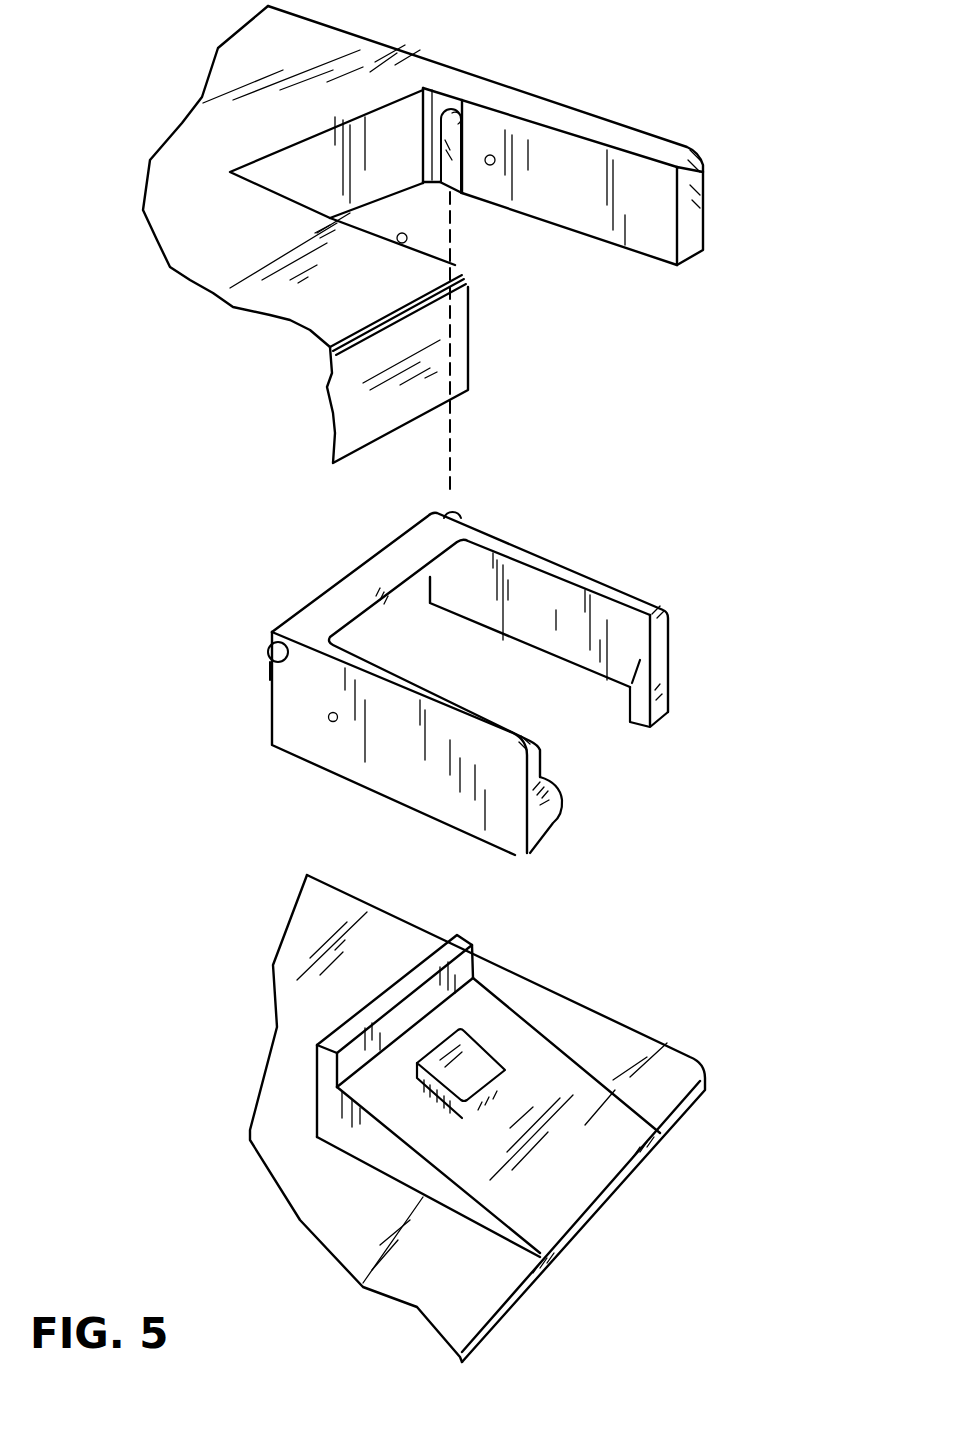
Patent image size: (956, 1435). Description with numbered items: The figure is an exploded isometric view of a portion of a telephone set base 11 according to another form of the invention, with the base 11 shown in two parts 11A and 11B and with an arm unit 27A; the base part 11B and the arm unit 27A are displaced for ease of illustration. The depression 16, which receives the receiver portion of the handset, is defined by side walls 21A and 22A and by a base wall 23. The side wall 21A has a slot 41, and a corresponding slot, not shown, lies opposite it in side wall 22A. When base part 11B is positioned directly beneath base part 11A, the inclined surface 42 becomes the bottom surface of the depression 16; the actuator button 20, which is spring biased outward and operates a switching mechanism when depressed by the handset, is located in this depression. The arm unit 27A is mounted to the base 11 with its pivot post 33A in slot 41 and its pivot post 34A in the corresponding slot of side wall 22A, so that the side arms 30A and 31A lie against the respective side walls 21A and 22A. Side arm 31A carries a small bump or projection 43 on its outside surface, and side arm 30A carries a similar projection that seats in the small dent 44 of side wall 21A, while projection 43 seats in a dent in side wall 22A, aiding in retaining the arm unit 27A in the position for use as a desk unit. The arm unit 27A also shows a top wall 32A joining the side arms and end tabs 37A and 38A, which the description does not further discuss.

The base 11 is at (385, 28).
The base part 11A is at (327, 320).
The base part 11B is at (487, 1285).
The depression 16 is at (532, 285).
The actuator button 20 is at (483, 1057).
The side wall 21A is at (593, 170).
The side wall 22A is at (400, 244).
The base wall 23 is at (293, 157).
The arm unit 27A is at (600, 756).
The side arm 30A is at (553, 597).
The side arm 31A is at (423, 780).
The top wall of clip 32A is at (360, 577).
The pivot post 33A is at (455, 515).
The pivot post 34A is at (266, 653).
The end tab 37A is at (665, 697).
The end tab 38A is at (547, 813).
The slot 41 is at (463, 127).
The inclined surface 42 is at (600, 1168).
The projection 43 is at (328, 721).
The dent 44 is at (495, 155).